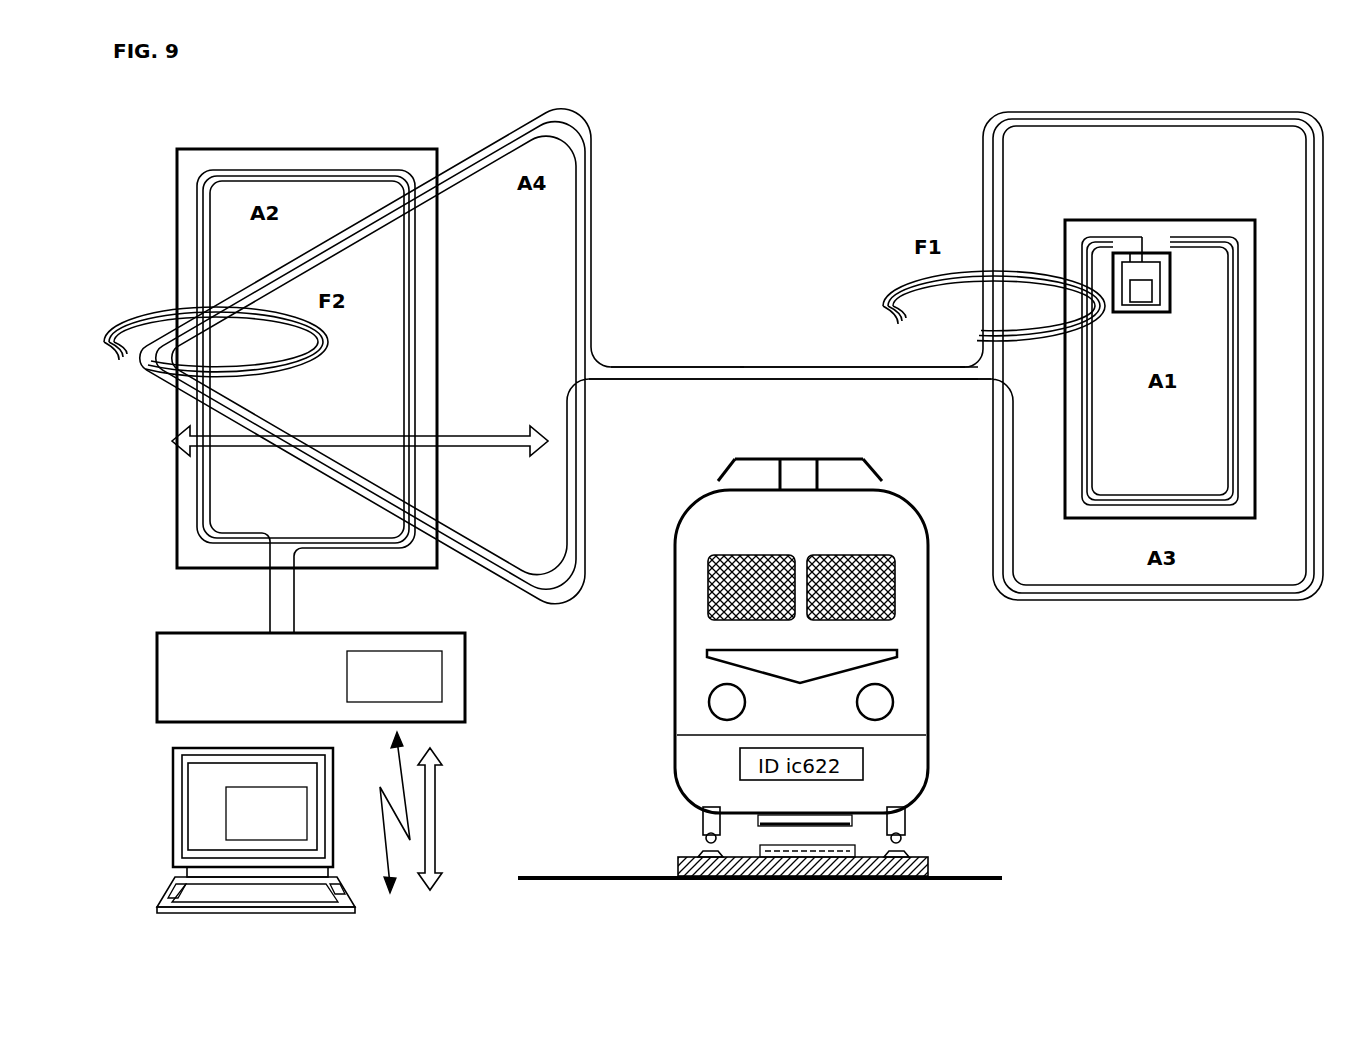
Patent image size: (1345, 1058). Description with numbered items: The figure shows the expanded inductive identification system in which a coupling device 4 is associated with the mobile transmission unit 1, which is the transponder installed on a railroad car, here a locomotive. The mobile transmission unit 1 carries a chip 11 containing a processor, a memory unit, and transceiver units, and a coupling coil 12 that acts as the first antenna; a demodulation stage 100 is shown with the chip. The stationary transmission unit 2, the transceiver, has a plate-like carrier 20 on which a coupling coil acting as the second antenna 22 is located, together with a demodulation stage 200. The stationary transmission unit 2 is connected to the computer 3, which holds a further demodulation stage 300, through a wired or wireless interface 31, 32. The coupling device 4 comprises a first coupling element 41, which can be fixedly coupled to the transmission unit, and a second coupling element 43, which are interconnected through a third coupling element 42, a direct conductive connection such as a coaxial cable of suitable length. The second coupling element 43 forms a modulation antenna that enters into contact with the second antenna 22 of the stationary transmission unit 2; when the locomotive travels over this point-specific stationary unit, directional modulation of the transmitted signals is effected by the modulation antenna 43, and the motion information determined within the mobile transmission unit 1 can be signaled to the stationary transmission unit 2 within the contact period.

The mobile transmission unit 1 is at (1123, 220).
The stationary transmission unit 2 is at (956, 770).
The computer 3 is at (256, 830).
The coupling device 4 is at (741, 195).
The chip 11 is at (1142, 253).
The coupling coil 12 is at (1215, 235).
The plate-like carrier 20 is at (278, 148).
The second antenna 22 is at (348, 170).
The interface 31 is at (441, 819).
The interface 32 is at (376, 812).
The first coupling element 41 is at (1113, 108).
The third coupling element 42 is at (742, 360).
The second coupling element 43 is at (592, 112).
The demodulation stage 100 is at (1142, 297).
The demodulation stage 200 is at (394, 676).
The demodulation stage 300 is at (266, 813).